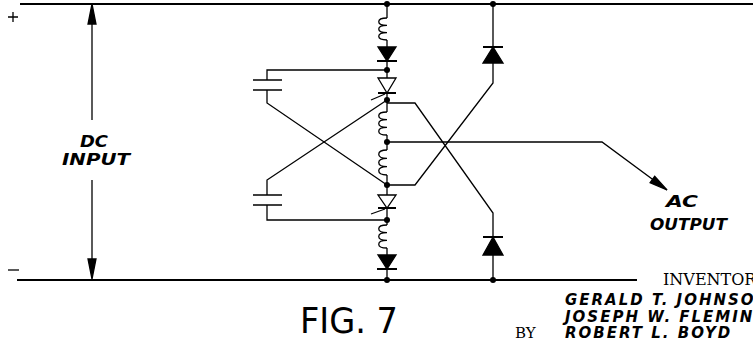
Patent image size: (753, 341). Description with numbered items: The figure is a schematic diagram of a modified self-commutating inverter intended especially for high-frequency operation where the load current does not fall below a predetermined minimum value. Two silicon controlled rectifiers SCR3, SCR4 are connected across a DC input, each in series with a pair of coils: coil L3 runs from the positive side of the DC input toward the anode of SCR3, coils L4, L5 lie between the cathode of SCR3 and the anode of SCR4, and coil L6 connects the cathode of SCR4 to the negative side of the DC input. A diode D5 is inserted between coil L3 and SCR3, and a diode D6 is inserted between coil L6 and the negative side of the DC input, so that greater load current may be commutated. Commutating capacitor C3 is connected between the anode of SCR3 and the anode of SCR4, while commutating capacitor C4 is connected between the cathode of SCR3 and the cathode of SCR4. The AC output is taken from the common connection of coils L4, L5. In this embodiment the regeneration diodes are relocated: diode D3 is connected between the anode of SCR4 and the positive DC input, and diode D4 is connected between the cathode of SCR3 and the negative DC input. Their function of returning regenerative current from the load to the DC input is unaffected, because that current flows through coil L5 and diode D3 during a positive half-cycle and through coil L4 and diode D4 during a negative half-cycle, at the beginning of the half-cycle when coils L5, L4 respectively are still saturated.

The coil L3 is at (391, 30).
The diode D5 is at (397, 56).
The silicon controlled rectifier SCR3 is at (398, 88).
The coil L4 is at (391, 123).
The coil L5 is at (391, 162).
The silicon controlled rectifier SCR4 is at (398, 203).
The coil L6 is at (391, 238).
The diode D6 is at (397, 264).
The regenerative diode D3 is at (502, 52).
The regenerative diode D4 is at (503, 248).
The commutating capacitor C3 is at (259, 79).
The commutating capacitor C4 is at (258, 196).